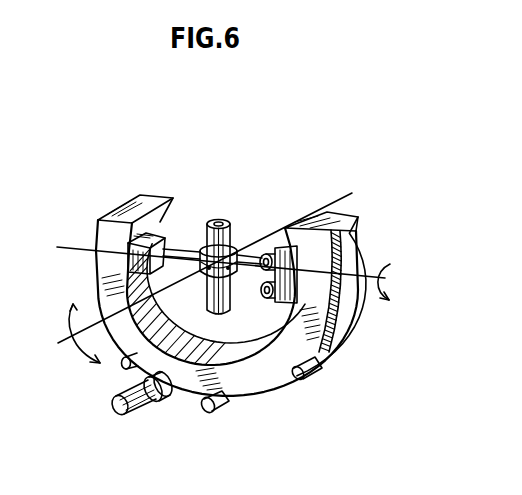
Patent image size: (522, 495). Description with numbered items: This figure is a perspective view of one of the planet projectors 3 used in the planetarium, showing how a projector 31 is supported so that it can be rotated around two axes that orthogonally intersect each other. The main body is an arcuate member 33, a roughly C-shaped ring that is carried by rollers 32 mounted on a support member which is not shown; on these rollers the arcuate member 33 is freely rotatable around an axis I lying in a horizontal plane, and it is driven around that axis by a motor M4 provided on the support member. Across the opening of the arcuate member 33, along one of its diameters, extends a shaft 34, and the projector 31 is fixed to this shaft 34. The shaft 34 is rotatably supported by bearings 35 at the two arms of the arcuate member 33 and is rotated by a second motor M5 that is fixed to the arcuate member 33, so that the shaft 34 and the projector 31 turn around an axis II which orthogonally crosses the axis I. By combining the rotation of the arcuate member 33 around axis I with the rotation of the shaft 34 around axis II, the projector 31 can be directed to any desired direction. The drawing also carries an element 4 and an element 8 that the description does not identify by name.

The planet projector 3 is at (329, 182).
The C-shaped frame ring 4 is at (128, 212).
The guide slot 8 is at (327, 350).
The projector 31 is at (200, 235).
The rollers 32 is at (128, 352).
The arcuate member 33 is at (182, 378).
The shaft 34 is at (183, 247).
The bearings 35 is at (280, 247).
The motor M4 is at (135, 412).
The motor M5 is at (302, 313).
The axis I is at (70, 336).
The axis II is at (400, 282).